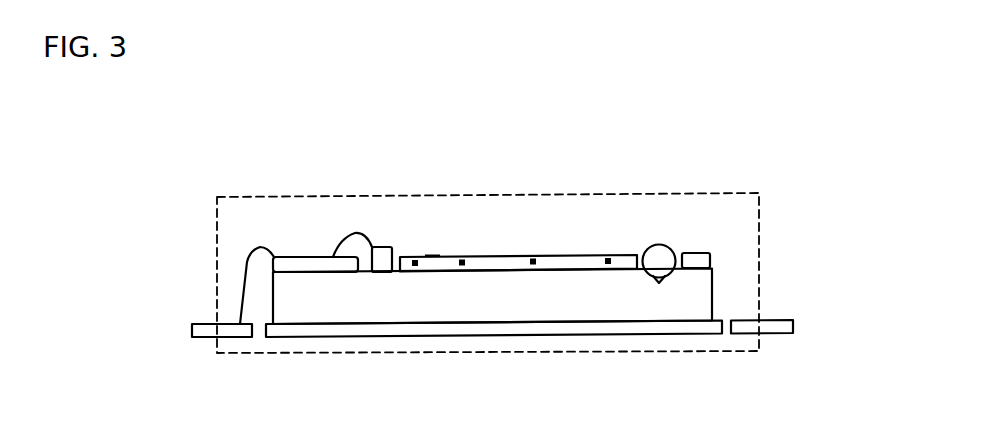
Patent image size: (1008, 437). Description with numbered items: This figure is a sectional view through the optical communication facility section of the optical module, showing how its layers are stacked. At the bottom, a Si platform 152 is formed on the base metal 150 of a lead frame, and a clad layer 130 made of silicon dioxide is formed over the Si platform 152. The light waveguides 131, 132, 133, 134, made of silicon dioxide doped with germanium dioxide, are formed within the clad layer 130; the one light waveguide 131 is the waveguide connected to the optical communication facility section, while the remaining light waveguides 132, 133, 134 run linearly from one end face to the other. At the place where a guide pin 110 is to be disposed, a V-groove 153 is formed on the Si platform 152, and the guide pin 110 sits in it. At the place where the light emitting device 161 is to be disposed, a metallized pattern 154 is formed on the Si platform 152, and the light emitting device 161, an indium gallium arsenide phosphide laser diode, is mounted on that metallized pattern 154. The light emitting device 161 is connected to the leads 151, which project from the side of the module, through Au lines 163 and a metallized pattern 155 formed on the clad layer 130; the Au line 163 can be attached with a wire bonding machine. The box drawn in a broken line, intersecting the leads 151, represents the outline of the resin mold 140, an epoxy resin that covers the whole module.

The guide pin 110 is at (656, 252).
The clad layer 130 is at (567, 257).
The light waveguide 131 is at (414, 260).
The light waveguide 132 is at (463, 260).
The light waveguide 133 is at (533, 260).
The light waveguide 134 is at (608, 259).
The resin mold 140 is at (760, 207).
The base metal 150 is at (467, 334).
The lead 151 is at (205, 337).
The Si platform 152 is at (573, 300).
The V-groove 153 is at (665, 280).
The metallized pattern 154 is at (369, 273).
The metallized pattern 155 is at (308, 257).
The light emitting device 161 is at (382, 250).
The Au line 163 is at (245, 272).